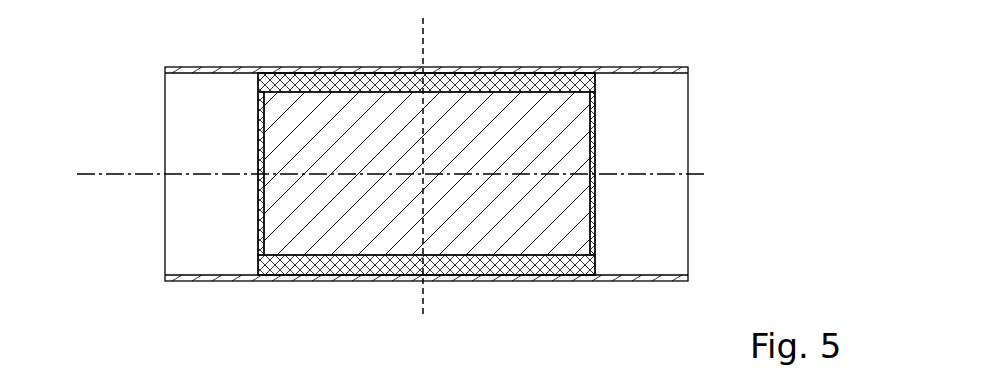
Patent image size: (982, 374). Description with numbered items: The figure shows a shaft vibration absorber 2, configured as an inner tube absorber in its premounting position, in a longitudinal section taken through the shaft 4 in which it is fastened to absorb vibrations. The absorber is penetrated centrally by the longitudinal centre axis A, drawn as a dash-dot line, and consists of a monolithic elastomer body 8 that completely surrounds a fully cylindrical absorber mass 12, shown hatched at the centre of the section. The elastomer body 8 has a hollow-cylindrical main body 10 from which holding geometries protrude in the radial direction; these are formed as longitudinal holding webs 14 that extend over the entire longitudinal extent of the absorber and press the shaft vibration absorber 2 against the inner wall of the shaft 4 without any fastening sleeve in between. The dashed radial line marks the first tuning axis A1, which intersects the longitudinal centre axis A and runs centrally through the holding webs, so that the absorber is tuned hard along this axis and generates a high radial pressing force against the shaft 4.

The shaft vibration absorber 2 is at (240, 240).
The shaft 4 is at (160, 70).
The elastomer body 8 is at (280, 73).
The main body 10 is at (256, 152).
The absorber mass 12 is at (260, 118).
The longitudinal holding webs 14 is at (262, 85).
The longitudinal centre axis A is at (120, 174).
The first tuning axis A1 is at (420, 41).